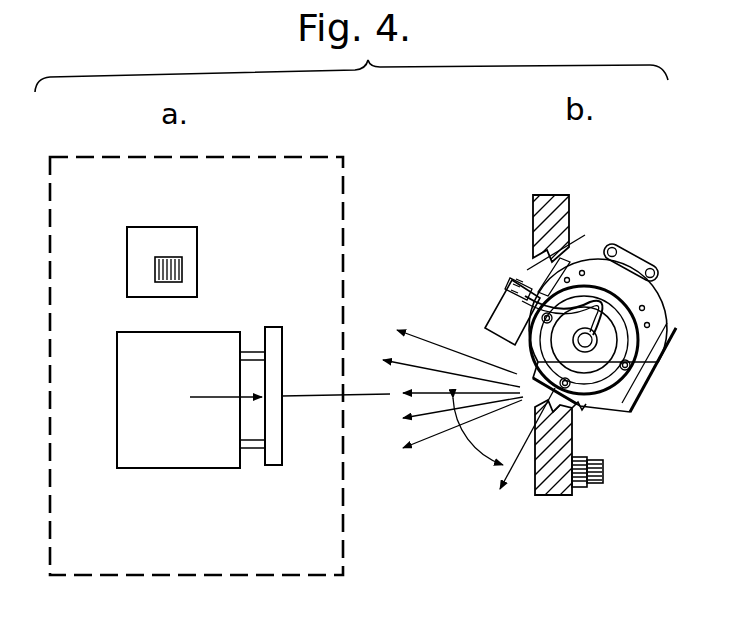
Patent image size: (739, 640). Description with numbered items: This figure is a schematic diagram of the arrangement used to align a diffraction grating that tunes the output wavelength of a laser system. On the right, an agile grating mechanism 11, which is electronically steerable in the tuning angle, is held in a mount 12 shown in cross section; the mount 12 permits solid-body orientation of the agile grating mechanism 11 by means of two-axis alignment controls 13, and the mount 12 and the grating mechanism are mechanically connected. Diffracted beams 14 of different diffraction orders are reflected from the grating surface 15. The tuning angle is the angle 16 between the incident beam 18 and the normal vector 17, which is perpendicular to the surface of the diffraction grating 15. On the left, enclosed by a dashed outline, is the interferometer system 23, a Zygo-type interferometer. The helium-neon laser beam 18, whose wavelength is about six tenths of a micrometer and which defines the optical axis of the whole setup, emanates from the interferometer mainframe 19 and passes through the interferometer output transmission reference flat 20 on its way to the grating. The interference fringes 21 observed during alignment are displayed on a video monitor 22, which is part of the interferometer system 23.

The agile grating mechanism 11 is at (653, 290).
The mount 12 is at (566, 195).
The two-axis alignment controls 13 is at (602, 457).
The diffracted beams 14 is at (431, 340).
The grating surface 15 is at (578, 410).
The angle 16 is at (472, 452).
The normal vector 17 is at (510, 480).
The laser beam 18 is at (330, 392).
The interferometer mainframe 19 is at (117, 468).
The interferometer output transmission reference flat 20 is at (282, 327).
The interference fringes 21 is at (182, 277).
The video monitor 22 is at (197, 227).
The interferometer system 23 is at (343, 157).